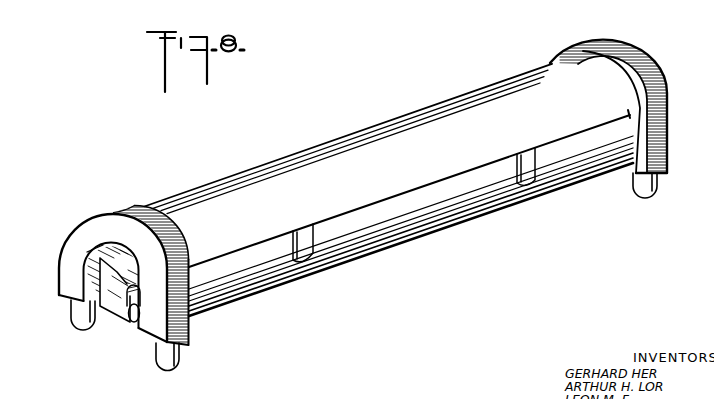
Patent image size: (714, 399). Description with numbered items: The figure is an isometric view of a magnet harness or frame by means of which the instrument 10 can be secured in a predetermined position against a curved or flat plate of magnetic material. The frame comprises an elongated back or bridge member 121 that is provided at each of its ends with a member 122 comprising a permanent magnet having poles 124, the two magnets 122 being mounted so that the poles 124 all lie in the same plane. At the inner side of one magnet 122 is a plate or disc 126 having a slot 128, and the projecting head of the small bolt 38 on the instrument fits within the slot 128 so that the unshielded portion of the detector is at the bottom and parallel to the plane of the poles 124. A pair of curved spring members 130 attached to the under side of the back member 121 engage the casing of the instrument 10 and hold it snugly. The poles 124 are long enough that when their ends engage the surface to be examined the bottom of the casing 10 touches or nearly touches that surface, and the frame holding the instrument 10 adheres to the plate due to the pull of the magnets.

The instrument 10 is at (413, 227).
The small bolt 38 is at (136, 318).
The back or bridge member 121 is at (360, 140).
The permanent magnet member 122 is at (162, 208).
The magnet pole 124 is at (80, 318).
The plate or disc 126 is at (110, 297).
The slot 128 is at (140, 323).
The curved spring member 130 is at (316, 255).